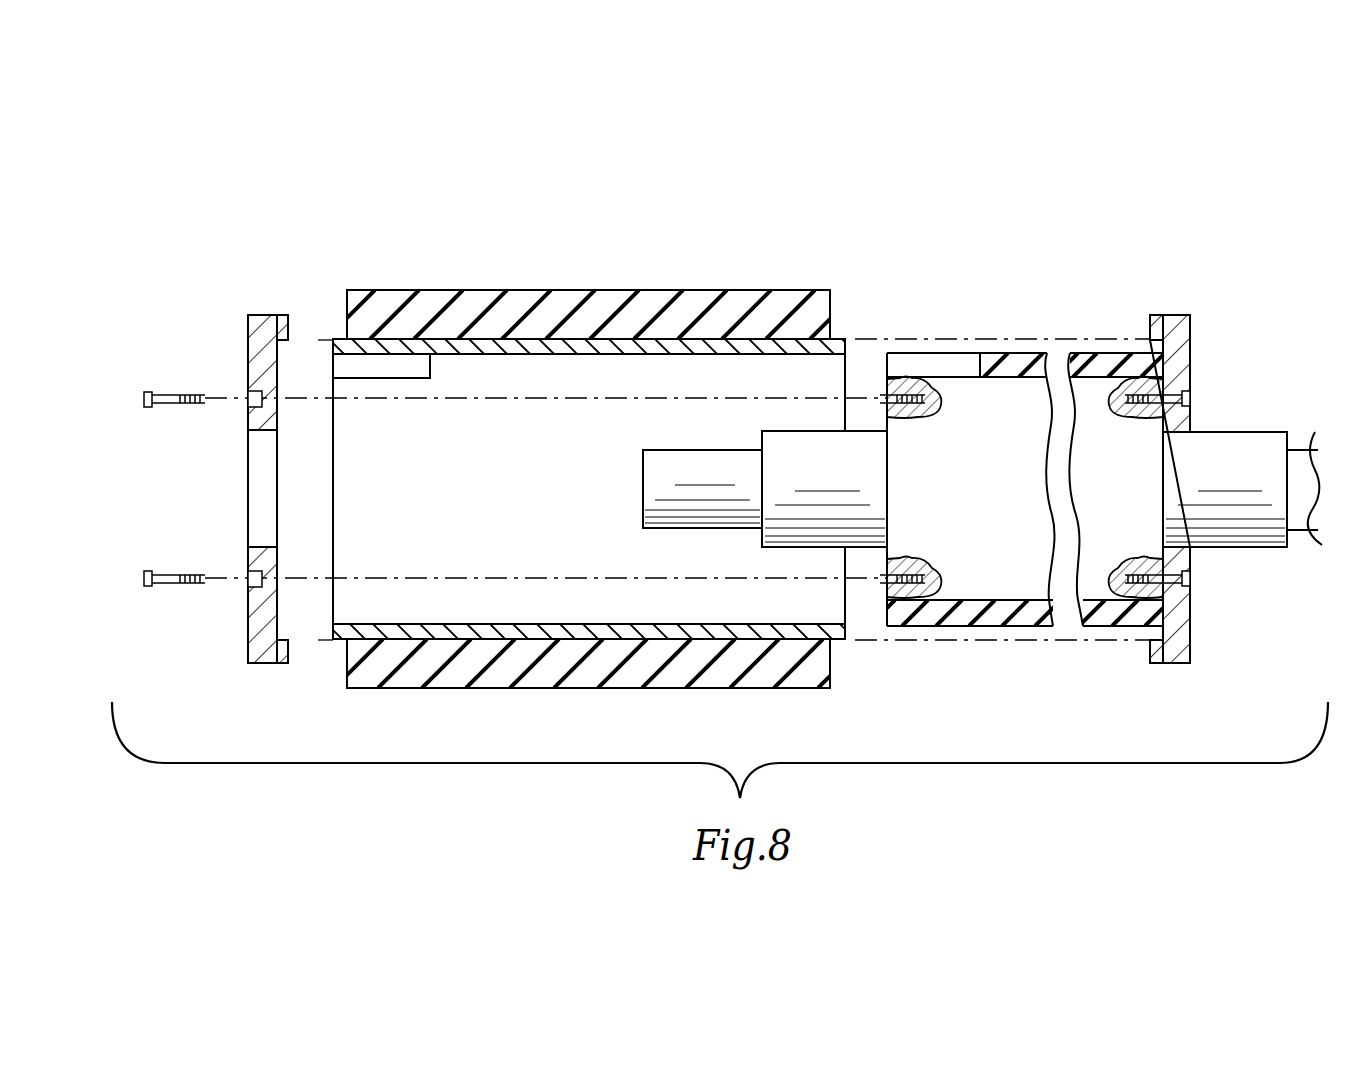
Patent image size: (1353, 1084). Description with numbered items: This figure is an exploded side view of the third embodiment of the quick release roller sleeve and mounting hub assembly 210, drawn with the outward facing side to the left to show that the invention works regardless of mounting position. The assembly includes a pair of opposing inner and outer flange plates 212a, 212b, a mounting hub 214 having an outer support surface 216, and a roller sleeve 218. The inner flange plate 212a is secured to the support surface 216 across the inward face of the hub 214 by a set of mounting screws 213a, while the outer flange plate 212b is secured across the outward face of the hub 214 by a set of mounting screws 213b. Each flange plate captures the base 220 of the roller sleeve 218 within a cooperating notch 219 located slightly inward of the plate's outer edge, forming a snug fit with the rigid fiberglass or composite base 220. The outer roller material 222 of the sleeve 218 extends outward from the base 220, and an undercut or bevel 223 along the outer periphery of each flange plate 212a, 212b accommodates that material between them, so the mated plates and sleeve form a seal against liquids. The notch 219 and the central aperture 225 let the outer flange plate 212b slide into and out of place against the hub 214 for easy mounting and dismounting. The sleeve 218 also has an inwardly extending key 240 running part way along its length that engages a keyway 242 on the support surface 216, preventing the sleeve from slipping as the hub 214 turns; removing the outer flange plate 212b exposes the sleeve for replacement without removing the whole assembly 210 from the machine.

The quick release roller sleeve and mounting hub assembly 210 is at (243, 197).
The inner flange plate 212a is at (1180, 322).
The outer flange plate 212b is at (257, 342).
The mounting screws 213a is at (1190, 400).
The mounting screws 213b is at (178, 578).
The mounting hub 214 is at (982, 489).
The outer support surface 216 is at (1028, 600).
The roller sleeve 218 is at (590, 477).
The cooperating notch 219 is at (287, 344).
The base 220 is at (670, 343).
The outer roller material 222 is at (550, 300).
The undercut or bevel 223 is at (290, 318).
The central aperture 225 is at (267, 499).
The key 240 is at (372, 366).
The keyway 242 is at (1020, 449).